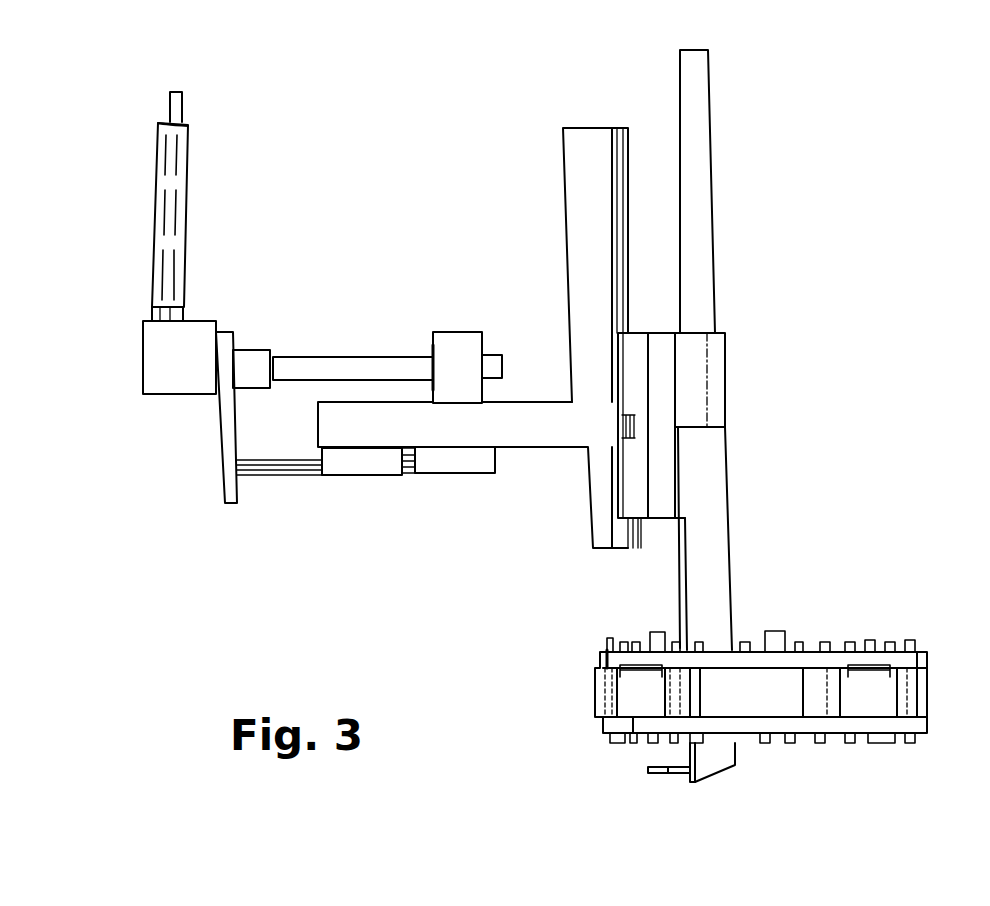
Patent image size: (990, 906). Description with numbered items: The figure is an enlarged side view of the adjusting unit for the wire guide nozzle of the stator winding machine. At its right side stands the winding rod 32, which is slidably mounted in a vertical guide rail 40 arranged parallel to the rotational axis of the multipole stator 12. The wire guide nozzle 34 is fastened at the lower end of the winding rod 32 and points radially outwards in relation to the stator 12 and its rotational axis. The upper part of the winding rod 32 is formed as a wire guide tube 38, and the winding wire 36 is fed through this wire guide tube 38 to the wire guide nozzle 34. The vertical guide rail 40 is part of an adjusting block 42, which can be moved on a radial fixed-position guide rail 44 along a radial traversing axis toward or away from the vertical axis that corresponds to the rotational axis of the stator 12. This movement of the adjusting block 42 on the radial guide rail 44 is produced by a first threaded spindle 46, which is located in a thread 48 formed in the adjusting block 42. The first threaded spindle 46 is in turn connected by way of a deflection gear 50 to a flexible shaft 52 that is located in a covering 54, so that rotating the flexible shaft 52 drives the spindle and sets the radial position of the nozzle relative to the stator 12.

The stator 12 is at (915, 723).
The winding rod 32 is at (727, 420).
The wire guide nozzle 34 is at (672, 773).
The winding wire 36 is at (698, 50).
The wire guide tube 38 is at (715, 252).
The vertical guide rail 40 is at (630, 128).
The adjusting block 42 is at (503, 432).
The radial guide rail 44 is at (285, 473).
The first threaded spindle 46 is at (317, 357).
The thread 48 is at (428, 355).
The deflection gear 50 is at (160, 378).
The flexible shaft 52 is at (180, 101).
The covering 54 is at (155, 200).